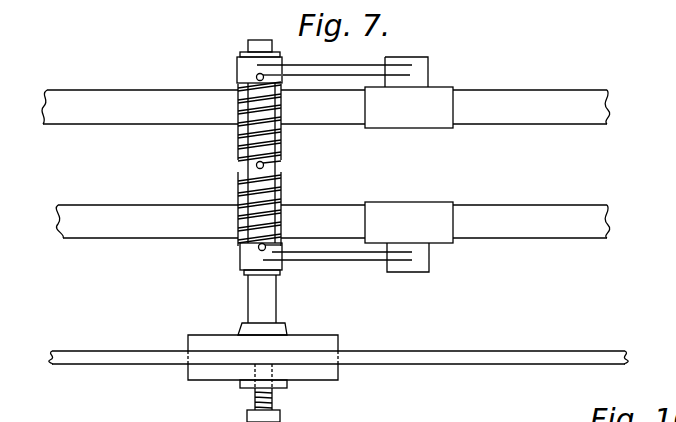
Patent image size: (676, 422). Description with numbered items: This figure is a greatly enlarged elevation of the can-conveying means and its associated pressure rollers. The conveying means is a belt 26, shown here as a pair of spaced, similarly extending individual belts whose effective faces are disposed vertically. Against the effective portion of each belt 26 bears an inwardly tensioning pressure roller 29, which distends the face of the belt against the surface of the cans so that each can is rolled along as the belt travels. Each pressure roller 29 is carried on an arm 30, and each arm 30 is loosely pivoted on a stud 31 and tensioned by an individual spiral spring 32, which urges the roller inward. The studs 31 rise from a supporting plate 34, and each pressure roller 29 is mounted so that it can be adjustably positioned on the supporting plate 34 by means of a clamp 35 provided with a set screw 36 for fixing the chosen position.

The belt 26 is at (538, 90).
The pressure roller 29 is at (430, 96).
The arm 30 is at (333, 67).
The stud 31 is at (252, 45).
The spiral spring 32 is at (240, 128).
The supporting plate 34 is at (492, 351).
The clamp 35 is at (333, 343).
The set screw 36 is at (275, 401).